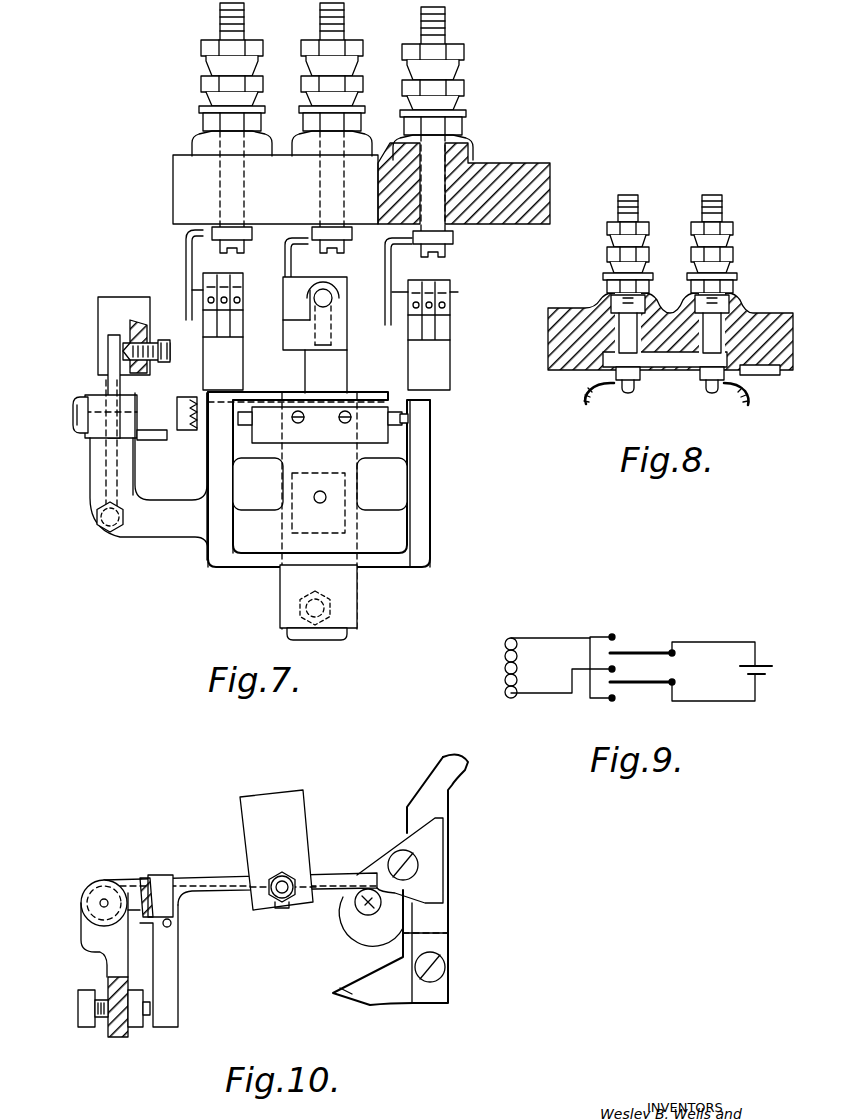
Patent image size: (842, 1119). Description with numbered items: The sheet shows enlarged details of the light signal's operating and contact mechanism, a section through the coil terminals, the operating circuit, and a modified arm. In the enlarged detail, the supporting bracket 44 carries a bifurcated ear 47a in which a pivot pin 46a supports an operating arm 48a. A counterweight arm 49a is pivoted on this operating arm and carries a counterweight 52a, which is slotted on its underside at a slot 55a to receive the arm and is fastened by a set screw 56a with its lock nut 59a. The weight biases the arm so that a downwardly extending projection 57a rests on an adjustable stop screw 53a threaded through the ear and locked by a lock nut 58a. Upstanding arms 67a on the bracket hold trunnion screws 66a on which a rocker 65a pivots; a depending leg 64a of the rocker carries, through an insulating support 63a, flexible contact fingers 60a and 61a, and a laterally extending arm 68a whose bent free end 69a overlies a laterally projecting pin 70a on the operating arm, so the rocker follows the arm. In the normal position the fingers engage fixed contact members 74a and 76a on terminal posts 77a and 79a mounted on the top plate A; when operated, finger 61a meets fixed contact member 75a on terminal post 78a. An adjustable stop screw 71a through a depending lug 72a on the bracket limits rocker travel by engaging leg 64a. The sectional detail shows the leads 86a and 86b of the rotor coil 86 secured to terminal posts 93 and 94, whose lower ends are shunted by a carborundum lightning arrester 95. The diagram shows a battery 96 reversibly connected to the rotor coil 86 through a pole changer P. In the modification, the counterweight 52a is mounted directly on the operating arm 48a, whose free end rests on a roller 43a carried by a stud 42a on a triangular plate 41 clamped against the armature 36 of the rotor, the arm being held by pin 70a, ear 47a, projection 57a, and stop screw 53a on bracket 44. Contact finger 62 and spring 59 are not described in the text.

In FIG. 7, the terminal post 79a is at (244, 30).
In FIG. 7, the terminal post 78a is at (344, 30).
In FIG. 7, the terminal post 77a is at (450, 36).
In FIG. 7, the fixed contact member 76a is at (184, 265).
In FIG. 7, the fixed contact member 75a is at (285, 266).
In FIG. 7, the fixed contact member 74a is at (385, 268).
In FIG. 7, the contact block 62 is at (243, 348).
In FIG. 7, the flexible contact finger 61a is at (347, 357).
In FIG. 7, the flexible contact finger 60a is at (412, 366).
In FIG. 7, the counterweight 52a is at (98, 318).
In FIG. 10, the counterweight 52a is at (305, 800).
In FIG. 7, the counterweight arm 49a is at (108, 348).
In FIG. 7, the slot 55a is at (133, 332).
In FIG. 7, the spring 59 is at (150, 342).
In FIG. 7, the set screw 56a is at (168, 350).
In FIG. 10, the set screw 56a is at (283, 904).
In FIG. 7, the operating arm 48a is at (108, 392).
In FIG. 10, the operating arm 48a is at (335, 876).
In FIG. 7, the pivot pin 46a is at (73, 428).
In FIG. 10, the pivot pin 46a is at (100, 903).
In FIG. 7, the bifurcated ear 47a is at (98, 462).
In FIG. 10, the bifurcated ear 47a is at (92, 952).
In FIG. 7, the downwardly extending projection 57a is at (106, 487).
In FIG. 10, the downwardly extending projection 57a is at (178, 1007).
In FIG. 7, the adjustable stop screw 53a is at (96, 519).
In FIG. 10, the adjustable stop screw 53a is at (83, 1008).
In FIG. 7, the upstanding arm 67a is at (215, 480).
In FIG. 7, the laterally projecting pin 70a is at (148, 440).
In FIG. 10, the laterally projecting pin 70a is at (172, 926).
In FIG. 7, the laterally extending arm 68a is at (183, 432).
In FIG. 10, the laterally extending arm 68a is at (146, 877).
In FIG. 7, the free end of arm 69a is at (155, 390).
In FIG. 10, the free end of arm 69a is at (165, 875).
In FIG. 7, the supporting bracket 44 is at (388, 566).
In FIG. 10, the supporting bracket 44 is at (448, 985).
In FIG. 7, the trunnion screw 66a is at (245, 418).
In FIG. 7, the insulating support 63a is at (265, 459).
In FIG. 7, the rocker 65a is at (375, 459).
In FIG. 7, the depending leg 64a is at (357, 606).
In FIG. 7, the adjustable stop screw 71a is at (298, 608).
In FIG. 7, the depending lug 72a is at (287, 634).
In FIG. 8, the top plate A is at (572, 308).
In FIG. 8, the carborundum lightning arrester 95 is at (670, 367).
In FIG. 8, the terminal post 93 is at (618, 206).
In FIG. 8, the terminal post 94 is at (722, 206).
In FIG. 8, the coil lead 86a is at (598, 392).
In FIG. 8, the coil lead 86b is at (748, 396).
In FIG. 9, the rotor coil 86 is at (520, 683).
In FIG. 9, the pole changer P is at (640, 665).
In FIG. 9, the battery 96 is at (745, 666).
In FIG. 10, the lock nut 58a is at (132, 1030).
In FIG. 10, the lock nut 59a is at (288, 860).
In FIG. 10, the triangular plate 41 is at (387, 930).
In FIG. 10, the stud 42a is at (365, 912).
In FIG. 10, the roller 43a is at (356, 906).
In FIG. 10, the armature 36 is at (330, 983).